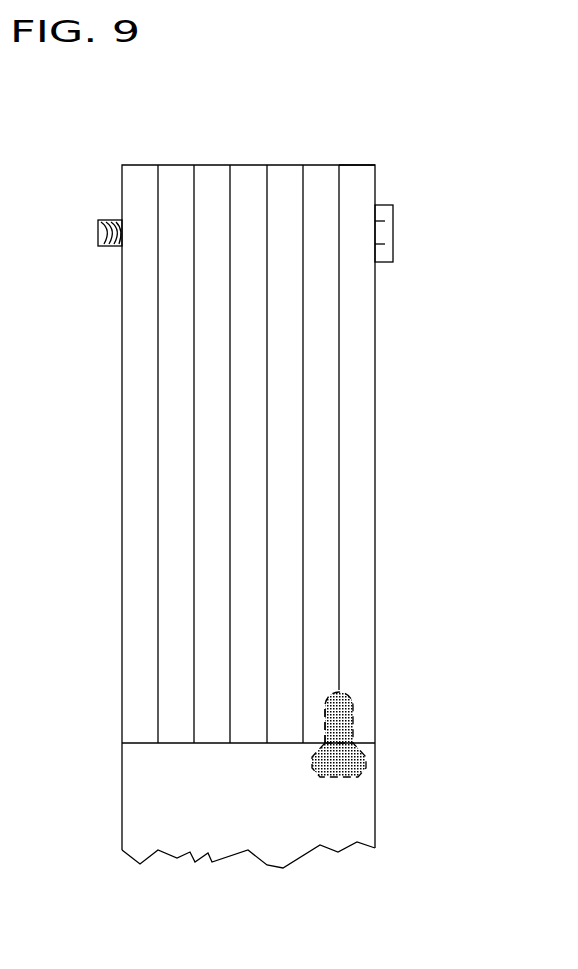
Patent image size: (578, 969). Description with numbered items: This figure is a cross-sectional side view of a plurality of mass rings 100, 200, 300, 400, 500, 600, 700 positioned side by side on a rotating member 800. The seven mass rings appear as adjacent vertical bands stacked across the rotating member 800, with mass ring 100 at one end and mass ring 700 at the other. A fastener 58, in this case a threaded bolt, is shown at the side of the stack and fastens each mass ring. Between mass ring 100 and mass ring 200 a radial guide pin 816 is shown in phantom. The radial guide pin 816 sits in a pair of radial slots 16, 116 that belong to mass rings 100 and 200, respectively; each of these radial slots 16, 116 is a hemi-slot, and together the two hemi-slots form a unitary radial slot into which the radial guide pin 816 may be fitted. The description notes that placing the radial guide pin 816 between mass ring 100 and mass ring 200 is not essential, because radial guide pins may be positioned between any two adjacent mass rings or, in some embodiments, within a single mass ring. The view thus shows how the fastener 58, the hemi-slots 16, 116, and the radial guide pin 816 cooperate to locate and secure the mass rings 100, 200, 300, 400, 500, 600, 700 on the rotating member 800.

The fastener 58 is at (393, 215).
The radial slot 16 is at (356, 705).
The radial slot 116 is at (323, 703).
The radial guide pin 816 is at (363, 756).
The rotating member 800 is at (266, 800).
The mass ring 700 is at (155, 437).
The mass ring 600 is at (191, 437).
The mass ring 500 is at (227, 437).
The mass ring 400 is at (264, 437).
The mass ring 300 is at (300, 437).
The mass ring 200 is at (336, 437).
The mass ring 100 is at (373, 437).